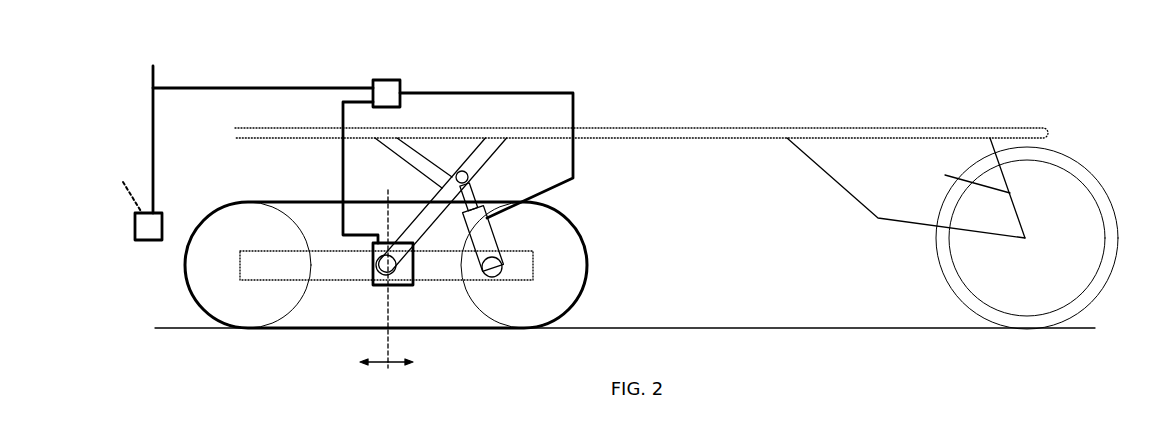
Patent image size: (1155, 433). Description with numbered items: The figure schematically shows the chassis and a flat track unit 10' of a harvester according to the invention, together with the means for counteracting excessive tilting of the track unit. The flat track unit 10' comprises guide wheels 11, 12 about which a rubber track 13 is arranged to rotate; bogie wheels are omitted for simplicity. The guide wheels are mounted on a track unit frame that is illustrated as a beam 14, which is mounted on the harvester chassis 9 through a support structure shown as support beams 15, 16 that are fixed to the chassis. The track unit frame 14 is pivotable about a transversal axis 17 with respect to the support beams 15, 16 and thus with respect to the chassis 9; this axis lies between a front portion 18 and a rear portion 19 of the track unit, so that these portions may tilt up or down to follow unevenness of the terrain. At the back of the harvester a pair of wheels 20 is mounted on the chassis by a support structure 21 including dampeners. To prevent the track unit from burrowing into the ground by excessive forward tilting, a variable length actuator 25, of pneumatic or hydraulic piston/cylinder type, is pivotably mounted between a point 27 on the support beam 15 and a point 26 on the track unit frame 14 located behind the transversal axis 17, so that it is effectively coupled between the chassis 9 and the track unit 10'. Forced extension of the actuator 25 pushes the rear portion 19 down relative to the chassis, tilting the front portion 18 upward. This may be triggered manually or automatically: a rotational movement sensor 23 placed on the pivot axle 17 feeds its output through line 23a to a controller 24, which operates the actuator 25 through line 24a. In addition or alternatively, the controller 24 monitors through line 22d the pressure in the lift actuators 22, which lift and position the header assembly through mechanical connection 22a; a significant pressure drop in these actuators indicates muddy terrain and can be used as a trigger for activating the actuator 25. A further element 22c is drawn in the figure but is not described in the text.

The harvester chassis 9 is at (682, 133).
The flat track unit 10' is at (381, 222).
The guide wheel 11 is at (212, 240).
The guide wheel 12 is at (567, 268).
The rubber track 13 is at (313, 202).
The track unit frame 14 is at (345, 268).
The support beam 15 is at (477, 158).
The support beam 16 is at (408, 160).
The transversal axis 17 is at (392, 272).
The front portion 18 is at (371, 351).
The rear portion 19 is at (403, 351).
The wheels 20 is at (982, 268).
The support structure 21 is at (868, 207).
The lift actuators 22 is at (135, 232).
The mechanical connection 22a is at (127, 193).
The sensor support 22c is at (153, 110).
The line 22d is at (240, 88).
The rotational movement sensor 23 is at (385, 285).
The line 23a is at (342, 165).
The controller 24 is at (383, 79).
The line 24a is at (575, 112).
The variable length actuator 25 is at (483, 233).
The point 26 is at (495, 270).
The point 27 is at (469, 175).